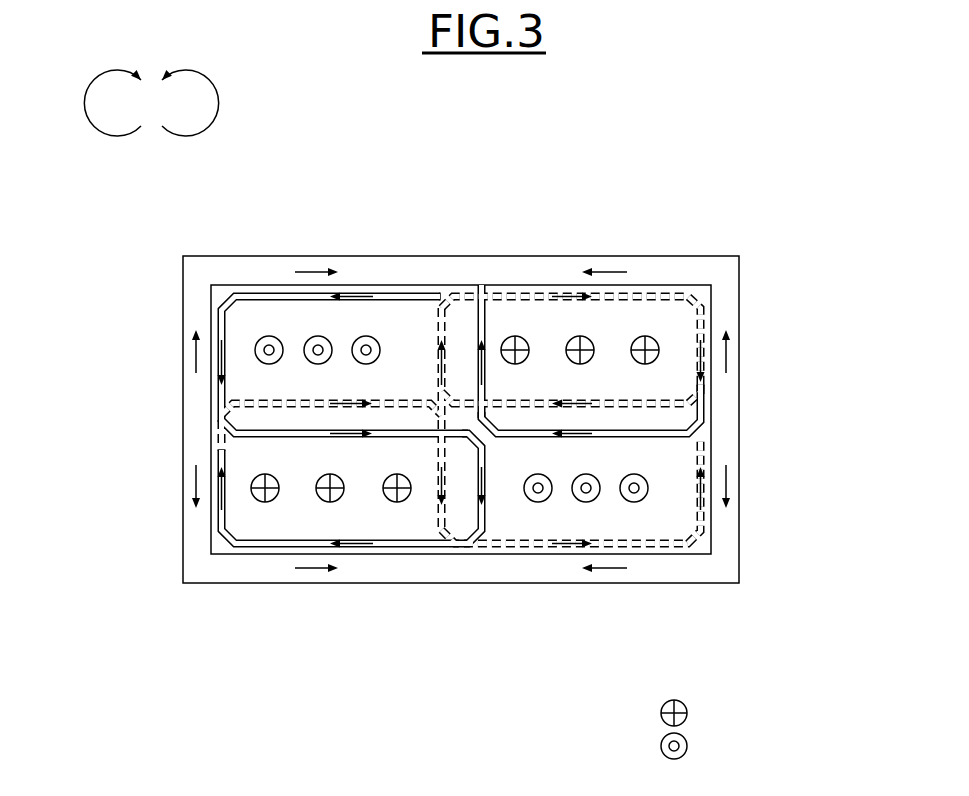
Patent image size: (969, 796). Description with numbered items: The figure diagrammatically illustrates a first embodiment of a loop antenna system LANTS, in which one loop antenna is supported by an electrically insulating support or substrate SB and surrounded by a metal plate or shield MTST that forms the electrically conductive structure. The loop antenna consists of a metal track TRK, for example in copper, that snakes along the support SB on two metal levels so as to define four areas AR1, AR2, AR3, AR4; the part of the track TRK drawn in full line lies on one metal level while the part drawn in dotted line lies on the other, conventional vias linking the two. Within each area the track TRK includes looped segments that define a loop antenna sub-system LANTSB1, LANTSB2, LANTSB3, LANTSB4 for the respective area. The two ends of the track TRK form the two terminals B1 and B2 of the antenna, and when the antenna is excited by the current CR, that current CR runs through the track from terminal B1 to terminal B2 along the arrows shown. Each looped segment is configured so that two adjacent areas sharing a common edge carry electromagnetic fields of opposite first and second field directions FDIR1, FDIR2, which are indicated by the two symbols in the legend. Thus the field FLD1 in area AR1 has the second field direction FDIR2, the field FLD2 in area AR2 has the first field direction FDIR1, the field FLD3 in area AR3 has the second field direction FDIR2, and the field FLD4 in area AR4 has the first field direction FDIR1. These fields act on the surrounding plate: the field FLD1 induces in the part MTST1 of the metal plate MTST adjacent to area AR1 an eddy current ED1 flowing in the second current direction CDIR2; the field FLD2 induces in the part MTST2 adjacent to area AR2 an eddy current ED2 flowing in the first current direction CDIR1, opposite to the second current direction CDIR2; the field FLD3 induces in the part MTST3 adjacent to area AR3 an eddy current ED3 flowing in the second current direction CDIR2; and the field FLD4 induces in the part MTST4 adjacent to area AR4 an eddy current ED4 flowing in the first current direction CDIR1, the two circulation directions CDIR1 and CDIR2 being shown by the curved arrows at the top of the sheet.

The metal plate MTST is at (734, 265).
The part of the metal plate adjacent to area AR1 MTST1 is at (223, 268).
The part of the metal plate adjacent to area AR2 MTST2 is at (222, 569).
The part of the metal plate adjacent to area AR3 MTST3 is at (702, 569).
The part of the metal plate adjacent to area AR4 MTST4 is at (700, 270).
The support SB is at (702, 542).
The loop antenna system LANTS is at (262, 573).
The loop antenna sub-system LANTSB1 is at (210, 296).
The loop antenna sub-system LANTSB2 is at (210, 541).
The loop antenna sub-system LANTSB3 is at (700, 553).
The loop antenna sub-system LANTSB4 is at (710, 297).
The metal track TRK is at (513, 293).
The terminal B1 is at (481, 283).
The terminal B2 is at (444, 283).
The current CR is at (348, 292).
The eddy current ED1 is at (316, 266).
The eddy current ED2 is at (195, 487).
The eddy current ED3 is at (604, 571).
The fourth edge direction ED4 is at (604, 266).
The area AR1 is at (391, 325).
The area AR2 is at (406, 513).
The area AR3 is at (658, 513).
The area AR4 is at (657, 325).
The electromagnetic field FLD1 is at (305, 347).
The electromagnetic field FLD2 is at (338, 497).
The electromagnetic field FLD3 is at (577, 500).
The electromagnetic field FLD4 is at (590, 360).
The first field direction FDIR1 is at (688, 713).
The second field direction FDIR2 is at (688, 746).
The first current direction CDIR1 is at (220, 103).
The second current direction CDIR2 is at (95, 128).